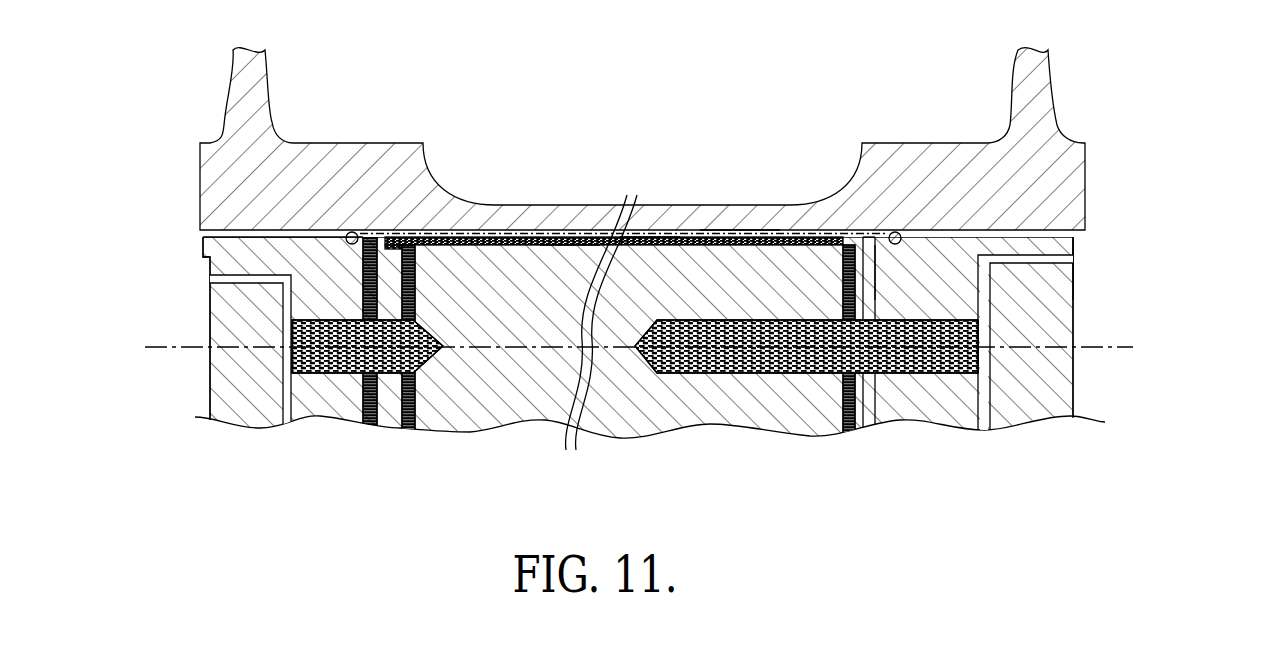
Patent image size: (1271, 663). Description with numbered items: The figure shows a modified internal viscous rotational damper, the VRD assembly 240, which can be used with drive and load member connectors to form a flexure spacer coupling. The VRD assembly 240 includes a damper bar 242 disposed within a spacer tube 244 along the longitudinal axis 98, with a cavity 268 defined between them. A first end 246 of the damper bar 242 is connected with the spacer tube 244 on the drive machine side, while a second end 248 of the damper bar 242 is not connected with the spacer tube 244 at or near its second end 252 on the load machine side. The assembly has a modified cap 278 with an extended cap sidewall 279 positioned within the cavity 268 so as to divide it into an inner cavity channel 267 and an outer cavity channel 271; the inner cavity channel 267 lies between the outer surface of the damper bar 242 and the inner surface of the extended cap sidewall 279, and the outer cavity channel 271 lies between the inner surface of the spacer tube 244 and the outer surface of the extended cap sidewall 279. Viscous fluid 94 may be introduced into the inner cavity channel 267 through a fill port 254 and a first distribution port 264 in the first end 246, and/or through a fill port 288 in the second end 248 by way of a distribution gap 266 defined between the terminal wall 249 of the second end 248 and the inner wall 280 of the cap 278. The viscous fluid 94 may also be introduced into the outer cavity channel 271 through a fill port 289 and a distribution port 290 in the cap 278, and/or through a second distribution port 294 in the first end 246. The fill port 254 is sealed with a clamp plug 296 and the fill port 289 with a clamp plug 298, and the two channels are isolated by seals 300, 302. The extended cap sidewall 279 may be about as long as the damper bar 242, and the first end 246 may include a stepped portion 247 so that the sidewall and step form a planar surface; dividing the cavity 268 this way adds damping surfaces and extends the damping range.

The viscous damping fluid 94 is at (735, 233).
The longitudinal axis 98 is at (165, 349).
The VRD assembly 240 is at (1138, 263).
The damper bar 242 is at (484, 372).
The spacer tube 244 is at (793, 215).
The first end of damper bar 246 is at (322, 416).
The stepped portion 247 is at (272, 242).
The second end of damper bar 248 is at (780, 428).
The terminal wall 249 is at (862, 248).
The second end of spacer tube 252 is at (1015, 137).
The fill port 254 is at (384, 377).
The first distribution port 264 is at (415, 278).
The distribution gap 266 is at (848, 430).
The inner cavity channel 267 is at (560, 245).
The cavity 268 is at (570, 237).
The outer cavity channel 271 is at (650, 237).
The cap 278 is at (957, 425).
The extended cap sidewall 279 is at (505, 233).
The inner wall of cap 280 is at (868, 430).
The fill port 288 is at (724, 375).
The fill port 289 is at (978, 340).
The distribution port 290 is at (875, 272).
The second distribution port 294 is at (363, 277).
The clamp plug 296 is at (218, 317).
The clamp plug 298 is at (1073, 368).
The seal 300 is at (352, 232).
The seal 302 is at (395, 240).